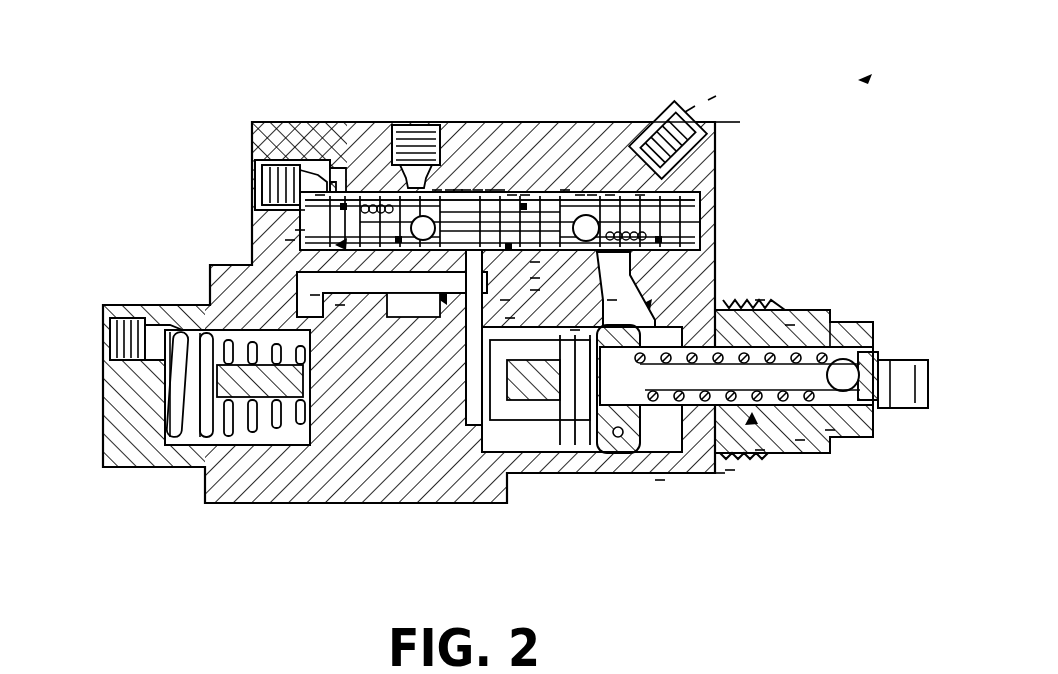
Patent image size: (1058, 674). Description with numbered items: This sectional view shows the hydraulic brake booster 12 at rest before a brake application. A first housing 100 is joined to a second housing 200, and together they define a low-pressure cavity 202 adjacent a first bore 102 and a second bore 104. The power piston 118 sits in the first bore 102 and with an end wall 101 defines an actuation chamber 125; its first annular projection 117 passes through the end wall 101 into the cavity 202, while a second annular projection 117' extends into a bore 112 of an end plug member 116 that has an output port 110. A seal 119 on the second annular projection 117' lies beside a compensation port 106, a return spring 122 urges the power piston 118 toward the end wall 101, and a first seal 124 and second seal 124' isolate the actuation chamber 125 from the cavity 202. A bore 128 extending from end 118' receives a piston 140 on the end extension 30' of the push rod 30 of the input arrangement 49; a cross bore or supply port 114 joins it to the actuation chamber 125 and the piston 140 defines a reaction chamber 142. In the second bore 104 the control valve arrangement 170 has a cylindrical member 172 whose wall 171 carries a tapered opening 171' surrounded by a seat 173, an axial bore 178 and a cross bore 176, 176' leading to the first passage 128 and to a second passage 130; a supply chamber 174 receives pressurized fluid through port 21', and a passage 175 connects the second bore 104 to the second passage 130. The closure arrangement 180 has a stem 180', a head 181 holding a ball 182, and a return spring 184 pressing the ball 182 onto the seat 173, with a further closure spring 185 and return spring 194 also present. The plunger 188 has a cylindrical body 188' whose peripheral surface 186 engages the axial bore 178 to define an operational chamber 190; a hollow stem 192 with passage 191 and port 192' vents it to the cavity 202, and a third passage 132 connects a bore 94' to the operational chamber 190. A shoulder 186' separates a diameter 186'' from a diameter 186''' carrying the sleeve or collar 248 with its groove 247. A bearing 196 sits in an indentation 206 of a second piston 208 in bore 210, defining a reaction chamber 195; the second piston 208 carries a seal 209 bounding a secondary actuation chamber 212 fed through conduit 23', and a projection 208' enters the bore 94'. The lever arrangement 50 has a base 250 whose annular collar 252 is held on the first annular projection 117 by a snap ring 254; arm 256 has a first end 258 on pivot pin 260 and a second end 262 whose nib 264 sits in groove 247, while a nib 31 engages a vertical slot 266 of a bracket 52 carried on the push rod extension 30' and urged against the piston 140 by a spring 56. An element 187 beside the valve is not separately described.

The hydraulic brake booster 12 is at (862, 78).
The port 21' is at (352, 89).
The conduit 23' is at (760, 101).
The push rod 30 is at (906, 400).
The push rod end extension 30' is at (840, 470).
The nib 31 is at (720, 478).
The input arrangement 49 is at (760, 452).
The lever arrangement 50 is at (790, 325).
The bracket 52 is at (730, 470).
The spring 56 is at (830, 432).
The bore 94' is at (793, 179).
The first housing 100 is at (255, 503).
The end wall 101 is at (555, 473).
The first bore 102 is at (400, 503).
The second bore 104 is at (350, 503).
The compensation port 106 is at (208, 272).
The output port 110 is at (104, 320).
The bore 112 is at (215, 503).
The supply port (cross bore) 114 is at (465, 340).
The end plug member 116 is at (112, 467).
The first annular projection 117 is at (692, 539).
The second annular projection 117' is at (301, 542).
The power piston 118 is at (453, 547).
The end 118' is at (616, 495).
The seal 119 is at (300, 503).
The return spring 122 is at (195, 470).
The first seal 124 is at (414, 549).
The second seal 124' is at (621, 528).
The actuation chamber 125 is at (490, 505).
The bore (first passage) 128 is at (625, 473).
The second passage 130 is at (265, 175).
The third passage 132 is at (535, 278).
The piston 140 is at (495, 503).
The reaction chamber 142 is at (462, 505).
The control valve arrangement 170 is at (548, 190).
The wall 171 is at (408, 114).
The tapered opening 171' is at (429, 124).
The cylindrical member 172 is at (512, 195).
The seat 173 is at (340, 305).
The supply chamber 174 is at (325, 122).
The passage 175 is at (320, 195).
The cross bore 176 is at (522, 304).
The cross bore 176' is at (471, 114).
The axial bore 178 is at (535, 290).
The closure arrangement 180 is at (228, 244).
The stem 180' is at (227, 226).
The head 181 is at (318, 295).
The ball 182 is at (300, 210).
The return spring 184 is at (275, 122).
The return or closure spring 185 is at (490, 190).
The peripheral surface 186 is at (526, 102).
The shoulder 186' is at (669, 136).
The diameter 186'' is at (651, 125).
The diameter 186''' is at (782, 165).
The passage 187 is at (715, 245).
The plunger 188 is at (629, 113).
The cylindrical body 188' is at (614, 102).
The operational chamber 190 is at (478, 190).
The passage 191 is at (525, 195).
The hollow stem 192 is at (446, 102).
The port 192' is at (590, 95).
The return spring 194 is at (715, 150).
The reaction chamber 195 is at (602, 228).
The bearing 196 is at (760, 300).
The second housing 200 is at (530, 473).
The cavity (relief chamber) 202 is at (575, 330).
The indentation 206 is at (715, 258).
The second piston 208 is at (782, 229).
The projection 208' is at (789, 211).
The seal 209 is at (715, 165).
The bore 210 is at (715, 272).
The secondary actuation chamber 212 is at (715, 205).
The groove 247 is at (535, 262).
The sleeve or collar 248 is at (690, 110).
The base 250 is at (688, 476).
The annular collar 252 is at (870, 325).
The snap ring 254 is at (660, 375).
The first arm 256 is at (875, 345).
The first end 258 is at (700, 475).
The pivot pin 260 is at (660, 473).
The second end 262 is at (712, 98).
The nib or button 264 is at (612, 300).
The vertical slot 266 is at (858, 362).